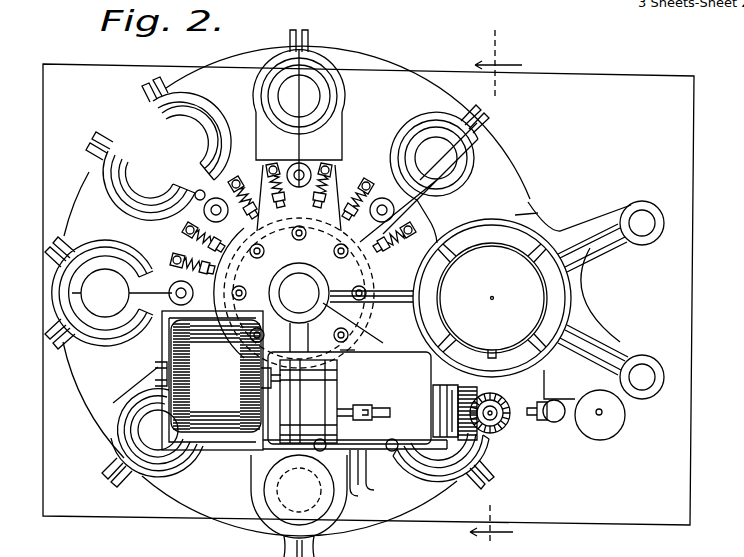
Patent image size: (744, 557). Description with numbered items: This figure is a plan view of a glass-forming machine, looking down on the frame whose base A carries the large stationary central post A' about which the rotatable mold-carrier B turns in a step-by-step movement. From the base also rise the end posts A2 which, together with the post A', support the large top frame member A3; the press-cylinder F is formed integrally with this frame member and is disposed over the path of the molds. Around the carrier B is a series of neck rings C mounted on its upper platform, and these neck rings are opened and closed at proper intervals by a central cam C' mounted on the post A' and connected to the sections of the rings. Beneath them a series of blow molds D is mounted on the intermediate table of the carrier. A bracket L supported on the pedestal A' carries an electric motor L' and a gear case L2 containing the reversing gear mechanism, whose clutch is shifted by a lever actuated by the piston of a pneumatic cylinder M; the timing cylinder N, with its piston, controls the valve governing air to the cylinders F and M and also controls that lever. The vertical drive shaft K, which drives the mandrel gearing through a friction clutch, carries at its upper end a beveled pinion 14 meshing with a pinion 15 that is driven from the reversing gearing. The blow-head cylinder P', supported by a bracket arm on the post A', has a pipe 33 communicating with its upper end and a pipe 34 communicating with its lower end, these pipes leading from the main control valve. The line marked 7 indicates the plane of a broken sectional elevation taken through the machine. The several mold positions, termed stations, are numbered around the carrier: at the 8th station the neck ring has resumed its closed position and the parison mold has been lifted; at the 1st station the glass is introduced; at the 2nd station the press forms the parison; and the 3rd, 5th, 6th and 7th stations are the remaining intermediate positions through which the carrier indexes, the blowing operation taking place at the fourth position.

The base of the frame A is at (350, 294).
The stationary post A' is at (313, 293).
The end posts A2 is at (643, 368).
The top frame member A3 is at (562, 230).
The rotatable carrier B is at (512, 183).
The neck rings C is at (253, 239).
The central cam C' is at (356, 366).
The blow molds D is at (257, 530).
The press-cylinder F is at (492, 298).
The vertical drive shaft K is at (510, 424).
The bracket L is at (304, 396).
The electric motor L' is at (218, 376).
The gear case L2 is at (402, 412).
The pneumatic cylinder M is at (310, 410).
The timing cylinder N is at (599, 428).
The blow-head cylinder P' is at (274, 496).
The section line 7- 7 is at (496, 293).
The beveled pinion 14 is at (513, 422).
The pinion 15 is at (496, 437).
The pipe 33 is at (350, 495).
The pipe 34 is at (373, 485).
The first station 1st is at (451, 145).
The second station 2nd is at (606, 295).
The third station 3rd is at (448, 466).
The fifth station 5th is at (145, 432).
The sixth station 6th is at (87, 293).
The seventh station 7th is at (140, 157).
The eighth station 8th is at (299, 101).